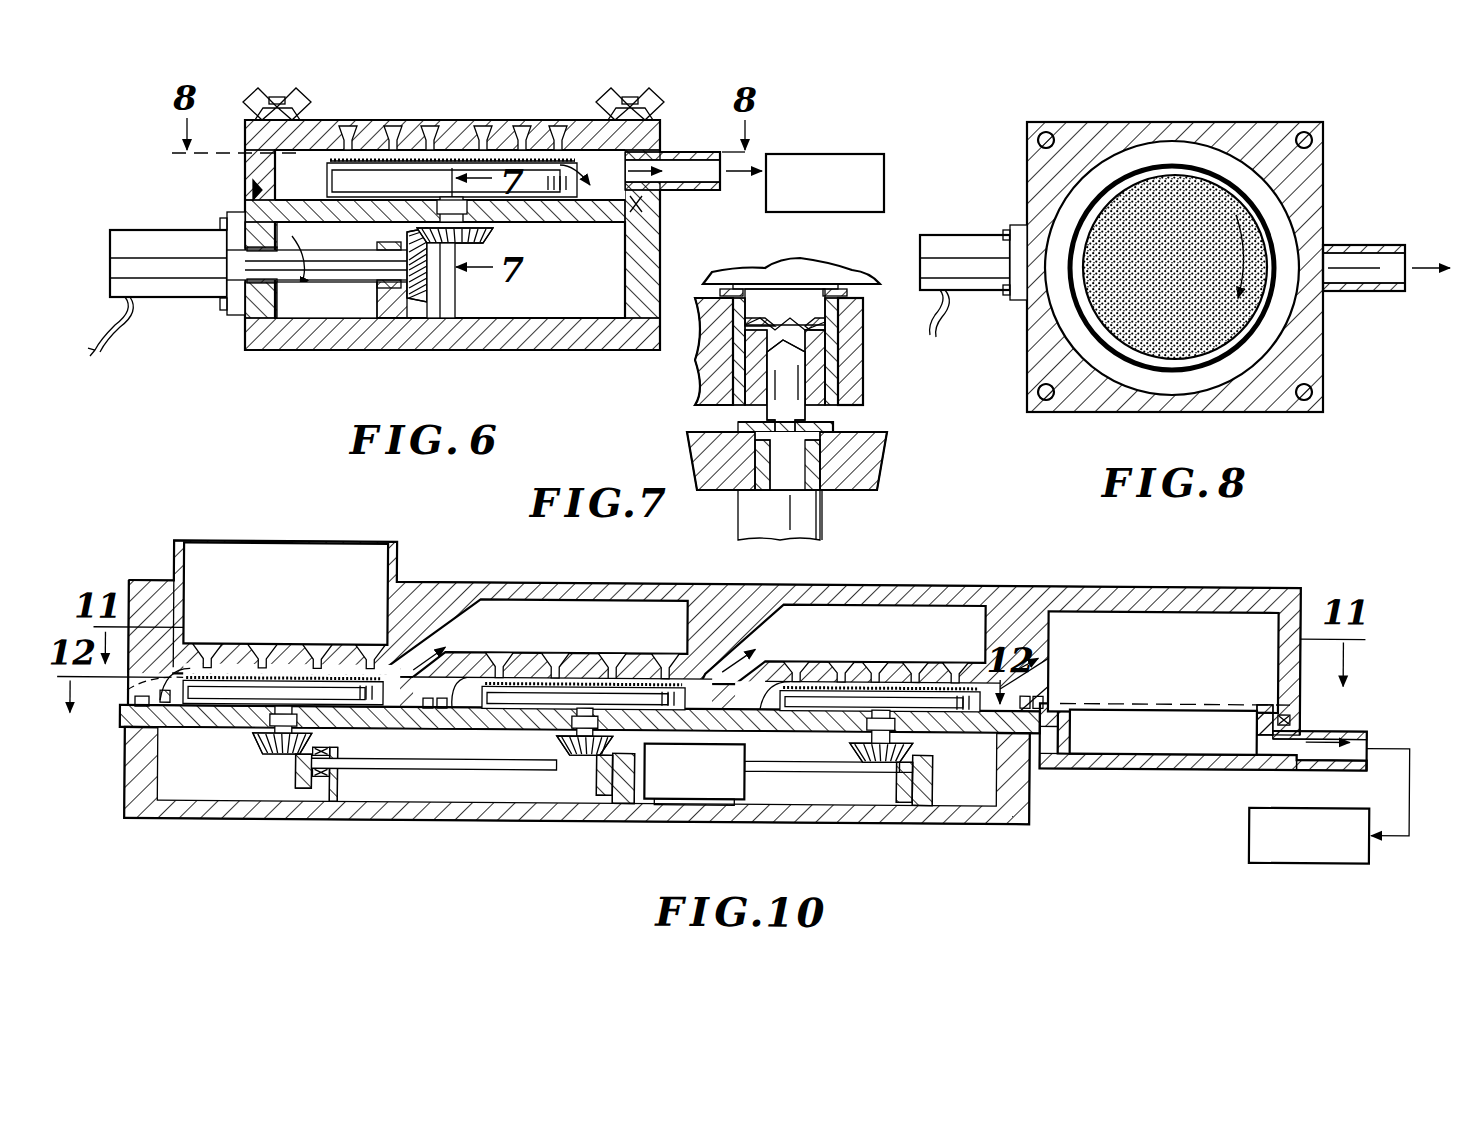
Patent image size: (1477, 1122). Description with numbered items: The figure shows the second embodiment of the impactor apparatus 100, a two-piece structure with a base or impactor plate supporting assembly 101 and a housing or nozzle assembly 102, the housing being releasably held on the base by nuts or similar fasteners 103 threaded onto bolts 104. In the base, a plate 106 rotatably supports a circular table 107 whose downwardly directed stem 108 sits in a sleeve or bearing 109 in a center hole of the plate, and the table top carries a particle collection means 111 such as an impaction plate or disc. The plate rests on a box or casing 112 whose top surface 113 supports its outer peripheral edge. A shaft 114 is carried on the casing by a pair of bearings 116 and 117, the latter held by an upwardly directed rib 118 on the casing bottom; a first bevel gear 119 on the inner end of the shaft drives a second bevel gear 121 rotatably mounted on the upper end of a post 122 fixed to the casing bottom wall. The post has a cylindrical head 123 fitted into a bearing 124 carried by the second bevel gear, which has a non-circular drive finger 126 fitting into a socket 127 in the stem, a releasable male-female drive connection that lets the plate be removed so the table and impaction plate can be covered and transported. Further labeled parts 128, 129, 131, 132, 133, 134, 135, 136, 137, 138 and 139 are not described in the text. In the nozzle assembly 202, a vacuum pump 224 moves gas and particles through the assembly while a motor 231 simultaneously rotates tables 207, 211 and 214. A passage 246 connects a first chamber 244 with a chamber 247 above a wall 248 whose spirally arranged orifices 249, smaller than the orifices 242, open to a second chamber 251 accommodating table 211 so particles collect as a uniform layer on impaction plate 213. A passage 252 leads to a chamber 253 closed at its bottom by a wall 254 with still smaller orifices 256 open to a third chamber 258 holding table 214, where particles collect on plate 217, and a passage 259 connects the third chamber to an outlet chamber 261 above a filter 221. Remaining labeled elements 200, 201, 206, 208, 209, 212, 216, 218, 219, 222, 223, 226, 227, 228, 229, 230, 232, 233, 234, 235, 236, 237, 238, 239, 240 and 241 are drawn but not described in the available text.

In FIG. 6, the impactor apparatus 100 is at (522, 122).
In FIG. 6, the base or impactor plate supporting assembly 101 is at (282, 354).
In FIG. 6, the housing or nozzle assembly 102 is at (326, 118).
In FIG. 6, the nuts or fasteners 103 is at (248, 103).
In FIG. 6, the bolts 104 is at (277, 97).
In FIG. 8, the bolts 104 is at (1047, 132).
In FIG. 6, the plate 106 is at (656, 212).
In FIG. 7, the plate 106 is at (865, 388).
In FIG. 6, the circular table 107 is at (452, 178).
In FIG. 7, the circular table 107 is at (788, 276).
In FIG. 6, the stem 108 is at (448, 208).
In FIG. 7, the stem 108 is at (795, 310).
In FIG. 7, the sleeve or bearing 109 is at (850, 330).
In FIG. 6, the particle collection means 111 is at (470, 162).
In FIG. 8, the particle collection means 111 is at (1212, 172).
In FIG. 6, the box or casing 112 is at (604, 343).
In FIG. 6, the top surface 113 is at (656, 250).
In FIG. 6, the shaft 114 is at (362, 257).
In FIG. 6, the bearing 116 is at (248, 330).
In FIG. 6, the bearing 117 is at (380, 290).
In FIG. 6, the rib 118 is at (392, 320).
In FIG. 6, the first bevel gear 119 is at (420, 312).
In FIG. 6, the second bevel gear 121 is at (492, 236).
In FIG. 7, the second bevel gear 121 is at (885, 462).
In FIG. 6, the post 122 is at (457, 298).
In FIG. 7, the post 122 is at (826, 505).
In FIG. 7, the cylindrical head 123 is at (826, 520).
In FIG. 7, the bearing 124 is at (752, 470).
In FIG. 7, the drive finger 126 is at (770, 410).
In FIG. 7, the socket 127 is at (832, 352).
In FIG. 6, the drive motor 128 is at (133, 232).
In FIG. 8, the drive motor 128 is at (992, 242).
In FIG. 6, the housing top 129 is at (662, 142).
In FIG. 8, the housing top 129 is at (1108, 135).
In FIG. 6, the seal 131 is at (252, 186).
In FIG. 6, the process chamber 132 is at (450, 175).
In FIG. 8, the process chamber 132 is at (1170, 150).
In FIG. 6, the gas inlet passage 133 is at (430, 128).
In FIG. 6, the gas inlet nozzle 134 is at (395, 128).
In FIG. 6, the gas inlet nozzle 135 is at (348, 128).
In FIG. 6, the outlet passage 136 is at (690, 205).
In FIG. 8, the outlet passage 136 is at (1387, 292).
In FIG. 6, the exhaust tube 137 is at (672, 178).
In FIG. 8, the exhaust tube 137 is at (1345, 265).
In FIG. 6, the vacuum pump 138 is at (812, 156).
In FIG. 6, the gas flow 139 is at (585, 168).
In FIG. 8, the gas flow 139 is at (1295, 195).
In FIG. 10, the upper housing 200 is at (1010, 581).
In FIG. 10, the lower housing / drive section 201 is at (190, 828).
In FIG. 10, the nozzle assembly 202 is at (432, 575).
In FIG. 10, the seal 206 is at (140, 705).
In FIG. 10, the table 207 is at (352, 704).
In FIG. 10, the spindle 208 is at (280, 718).
In FIG. 10, the wafer 209 is at (340, 682).
In FIG. 10, the table 211 is at (492, 696).
In FIG. 10, the spindle 212 is at (578, 722).
In FIG. 10, the impaction plate 213 is at (630, 690).
In FIG. 10, the table 214 is at (830, 690).
In FIG. 10, the spindle 216 is at (895, 720).
In FIG. 10, the plate 217 is at (982, 670).
In FIG. 10, the outlet floor 218 is at (1170, 758).
In FIG. 10, the outlet chamber 219 is at (1163, 732).
In FIG. 10, the filter 221 is at (1180, 694).
In FIG. 10, the outlet wall 222 is at (1240, 699).
In FIG. 10, the exhaust tube 223 is at (1335, 715).
In FIG. 10, the vacuum pump 224 is at (1250, 838).
In FIG. 10, the bottom wall 226 is at (826, 803).
In FIG. 10, the end wall 227 is at (1028, 755).
In FIG. 10, the partition plate 228 is at (142, 750).
In FIG. 10, the drive shaft 229 is at (500, 770).
In FIG. 10, the bearing 230 is at (332, 785).
In FIG. 10, the motor 231 is at (740, 781).
In FIG. 10, the gear assembly 232 is at (300, 790).
In FIG. 10, the bevel gear 233 is at (268, 742).
In FIG. 10, the gear assembly 234 is at (600, 792).
In FIG. 10, the bevel gear 235 is at (572, 758).
In FIG. 10, the coupling 236 is at (898, 777).
In FIG. 10, the bevel gear 237 is at (868, 740).
In FIG. 10, the inlet wall 238 is at (150, 590).
In FIG. 10, the inlet chamber wall 239 is at (172, 548).
In FIG. 10, the inlet chamber 240 is at (285, 593).
In FIG. 10, the gas nozzle 241 is at (282, 648).
In FIG. 10, the orifices 242 is at (302, 645).
In FIG. 10, the first chamber 244 is at (136, 700).
In FIG. 10, the passage 246 is at (452, 632).
In FIG. 10, the chamber 247 is at (583, 625).
In FIG. 10, the wall 248 is at (580, 655).
In FIG. 10, the orifices 249 is at (608, 660).
In FIG. 10, the second chamber 251 is at (448, 700).
In FIG. 10, the passage 252 is at (725, 660).
In FIG. 10, the chamber 253 is at (884, 629).
In FIG. 10, the wall 254 is at (905, 652).
In FIG. 10, the orifices 256 is at (912, 660).
In FIG. 10, the third chamber 258 is at (768, 700).
In FIG. 10, the passage 259 is at (1050, 667).
In FIG. 10, the outlet chamber 261 is at (1163, 655).